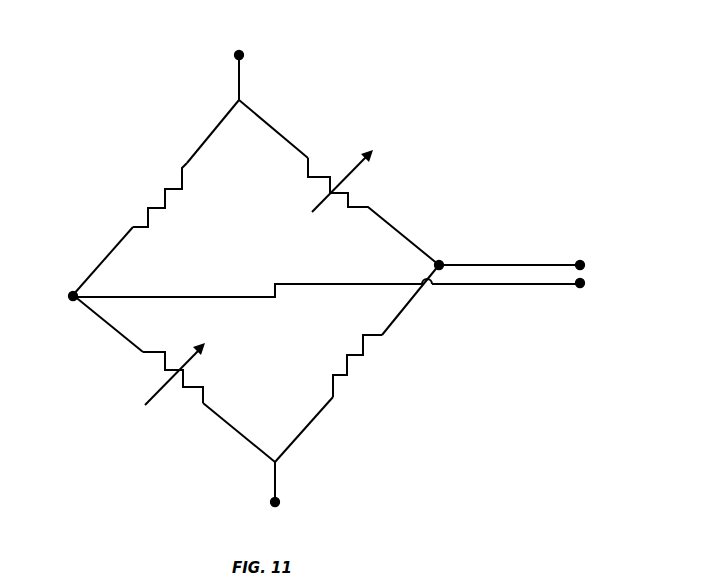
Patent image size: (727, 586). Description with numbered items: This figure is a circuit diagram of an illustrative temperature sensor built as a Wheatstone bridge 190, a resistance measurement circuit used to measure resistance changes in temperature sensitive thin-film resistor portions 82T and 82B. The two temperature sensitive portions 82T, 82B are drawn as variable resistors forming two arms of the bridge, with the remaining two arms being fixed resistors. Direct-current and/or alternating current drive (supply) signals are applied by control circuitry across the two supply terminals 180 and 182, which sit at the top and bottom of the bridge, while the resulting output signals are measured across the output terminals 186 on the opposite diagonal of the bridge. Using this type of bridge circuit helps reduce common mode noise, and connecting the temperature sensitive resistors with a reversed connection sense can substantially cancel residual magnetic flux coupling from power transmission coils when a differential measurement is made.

The Wheatstone bridge 190 is at (107, 84).
The terminal 180 is at (245, 54).
The terminal 182 is at (281, 503).
The output terminals 186 is at (586, 263).
The portion 82T is at (397, 173).
The portion 82B is at (163, 441).